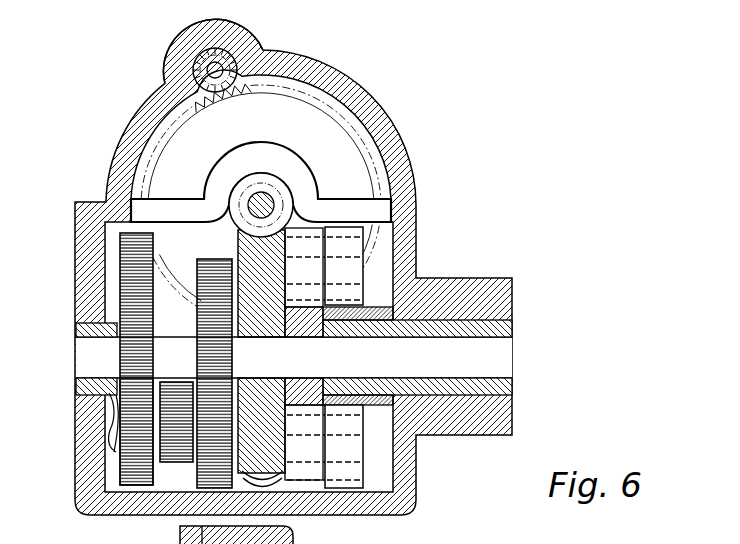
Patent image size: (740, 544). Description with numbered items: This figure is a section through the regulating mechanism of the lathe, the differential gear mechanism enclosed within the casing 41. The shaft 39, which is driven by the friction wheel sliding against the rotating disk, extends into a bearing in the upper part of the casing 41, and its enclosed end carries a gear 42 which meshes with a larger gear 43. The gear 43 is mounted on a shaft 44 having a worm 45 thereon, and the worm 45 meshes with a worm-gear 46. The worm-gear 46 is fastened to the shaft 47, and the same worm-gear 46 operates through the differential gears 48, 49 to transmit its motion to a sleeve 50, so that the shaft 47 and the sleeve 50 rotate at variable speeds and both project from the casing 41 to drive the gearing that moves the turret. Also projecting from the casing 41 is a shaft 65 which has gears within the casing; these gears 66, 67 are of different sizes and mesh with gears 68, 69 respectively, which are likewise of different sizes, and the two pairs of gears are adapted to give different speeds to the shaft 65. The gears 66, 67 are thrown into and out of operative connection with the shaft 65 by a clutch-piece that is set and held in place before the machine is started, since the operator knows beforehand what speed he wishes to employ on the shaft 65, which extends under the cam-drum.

The shaft 39 is at (213, 70).
The casing 41 is at (350, 104).
The gear 42 is at (254, 50).
The gear 43 is at (308, 93).
The shaft 44 is at (276, 196).
The worm 45 is at (273, 176).
The worm-gear 46 is at (257, 253).
The shaft 47 is at (508, 364).
The differential gear 48 is at (314, 228).
The differential gear 49 is at (355, 245).
The sleeve 50 is at (498, 328).
The shaft 65 is at (118, 438).
The gear 66 is at (173, 435).
The gear 67 is at (212, 373).
The gear 68 is at (122, 292).
The gear 69 is at (208, 285).